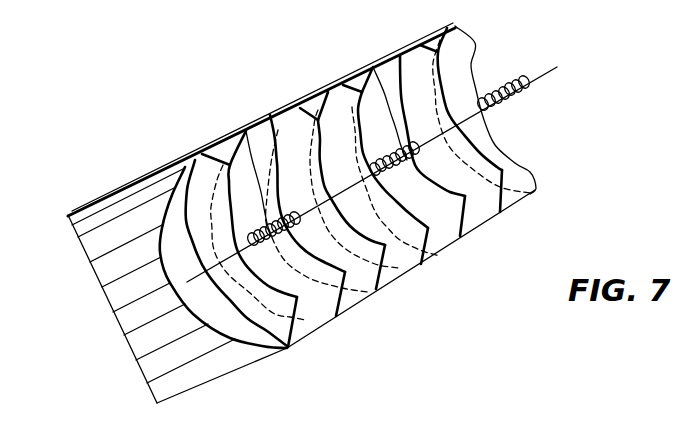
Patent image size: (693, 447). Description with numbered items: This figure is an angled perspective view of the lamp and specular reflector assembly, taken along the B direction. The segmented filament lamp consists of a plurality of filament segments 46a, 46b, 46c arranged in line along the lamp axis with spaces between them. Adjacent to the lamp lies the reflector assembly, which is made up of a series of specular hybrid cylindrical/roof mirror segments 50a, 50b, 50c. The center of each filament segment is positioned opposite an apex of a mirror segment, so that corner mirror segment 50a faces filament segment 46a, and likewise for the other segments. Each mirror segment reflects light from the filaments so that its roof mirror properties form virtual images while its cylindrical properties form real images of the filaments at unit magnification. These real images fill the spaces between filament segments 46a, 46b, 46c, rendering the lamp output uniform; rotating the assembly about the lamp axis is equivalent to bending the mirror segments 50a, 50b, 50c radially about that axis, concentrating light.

The filament segment 46a is at (241, 130).
The filament segment 46b is at (371, 67).
The filament segment 46c is at (507, 110).
The mirror segment 50a is at (312, 324).
The mirror segment 50b is at (393, 257).
The mirror segment 50c is at (477, 213).